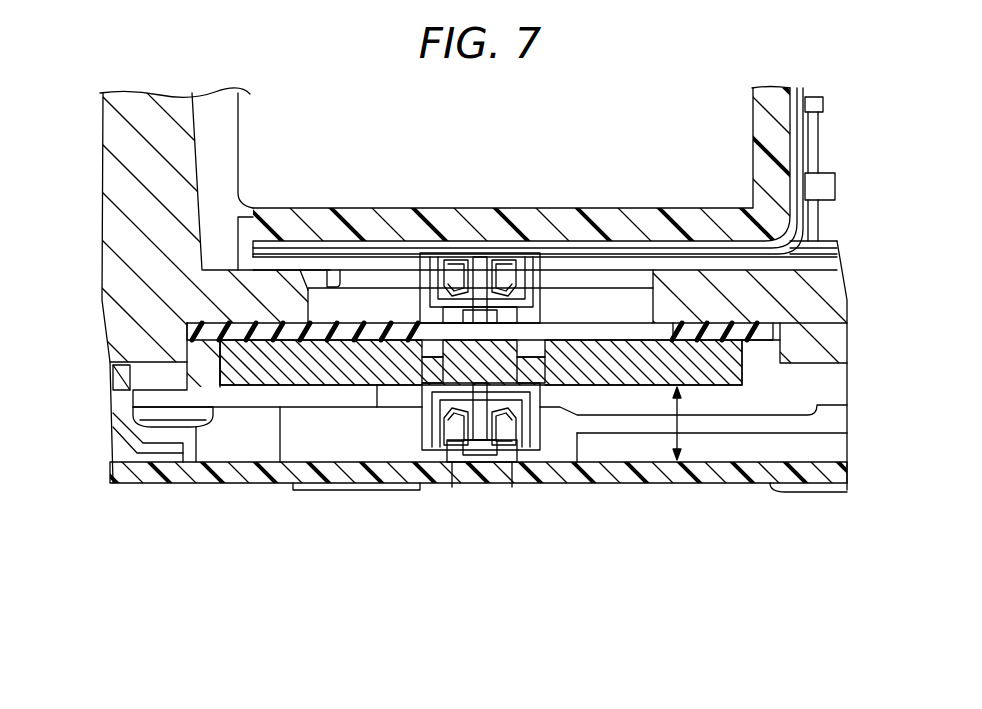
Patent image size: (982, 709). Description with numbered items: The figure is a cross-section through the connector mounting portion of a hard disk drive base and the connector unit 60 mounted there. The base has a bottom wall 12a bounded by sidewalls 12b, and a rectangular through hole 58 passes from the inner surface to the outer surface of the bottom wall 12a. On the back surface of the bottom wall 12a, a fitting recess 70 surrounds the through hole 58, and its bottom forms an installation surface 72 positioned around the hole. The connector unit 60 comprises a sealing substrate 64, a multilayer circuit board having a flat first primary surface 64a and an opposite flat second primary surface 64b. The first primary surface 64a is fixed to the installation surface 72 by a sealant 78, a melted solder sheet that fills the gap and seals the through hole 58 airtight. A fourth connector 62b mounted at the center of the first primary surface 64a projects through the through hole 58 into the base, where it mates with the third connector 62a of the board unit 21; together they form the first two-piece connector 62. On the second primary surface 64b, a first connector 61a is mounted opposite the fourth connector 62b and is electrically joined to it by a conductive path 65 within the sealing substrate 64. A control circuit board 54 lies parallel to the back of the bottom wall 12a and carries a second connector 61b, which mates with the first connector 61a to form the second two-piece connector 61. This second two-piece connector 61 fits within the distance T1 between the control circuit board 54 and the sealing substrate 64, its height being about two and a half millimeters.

The bottom wall 12a is at (845, 291).
The sidewalls 12b is at (120, 171).
The board unit 21 is at (573, 209).
The control circuit board 54 is at (687, 483).
The through hole 58 is at (614, 290).
The connector unit 60 is at (350, 397).
The second two-piece connector 61 is at (448, 485).
The first connector 61a is at (420, 405).
The second connector 61b is at (473, 477).
The first two-piece connector 62 is at (471, 218).
The third connector 62a is at (413, 268).
The fourth connector 62b is at (509, 224).
The sealing substrate 64 is at (491, 354).
The first primary surface 64a is at (356, 337).
The second primary surface 64b is at (650, 380).
The conductive path 65 is at (422, 372).
The fitting recess 70 is at (752, 363).
The installation surface 72 is at (712, 333).
The sealant 78 is at (187, 326).
The distance T1 is at (683, 404).